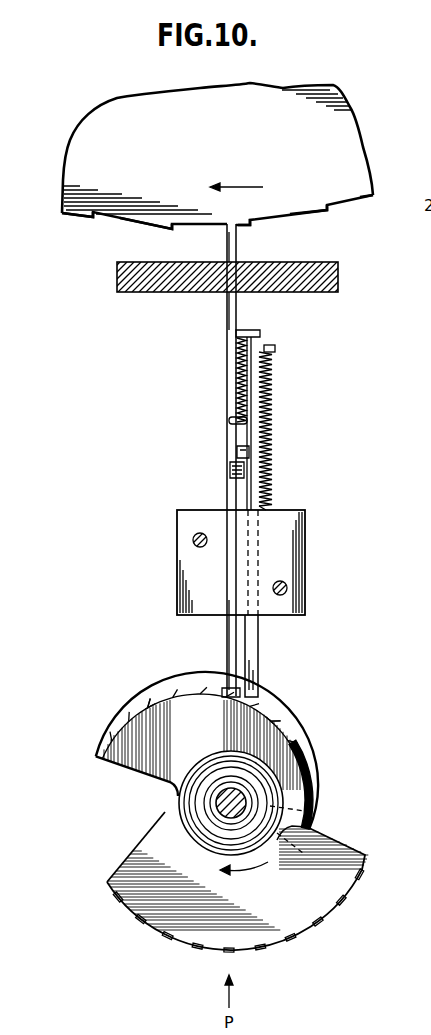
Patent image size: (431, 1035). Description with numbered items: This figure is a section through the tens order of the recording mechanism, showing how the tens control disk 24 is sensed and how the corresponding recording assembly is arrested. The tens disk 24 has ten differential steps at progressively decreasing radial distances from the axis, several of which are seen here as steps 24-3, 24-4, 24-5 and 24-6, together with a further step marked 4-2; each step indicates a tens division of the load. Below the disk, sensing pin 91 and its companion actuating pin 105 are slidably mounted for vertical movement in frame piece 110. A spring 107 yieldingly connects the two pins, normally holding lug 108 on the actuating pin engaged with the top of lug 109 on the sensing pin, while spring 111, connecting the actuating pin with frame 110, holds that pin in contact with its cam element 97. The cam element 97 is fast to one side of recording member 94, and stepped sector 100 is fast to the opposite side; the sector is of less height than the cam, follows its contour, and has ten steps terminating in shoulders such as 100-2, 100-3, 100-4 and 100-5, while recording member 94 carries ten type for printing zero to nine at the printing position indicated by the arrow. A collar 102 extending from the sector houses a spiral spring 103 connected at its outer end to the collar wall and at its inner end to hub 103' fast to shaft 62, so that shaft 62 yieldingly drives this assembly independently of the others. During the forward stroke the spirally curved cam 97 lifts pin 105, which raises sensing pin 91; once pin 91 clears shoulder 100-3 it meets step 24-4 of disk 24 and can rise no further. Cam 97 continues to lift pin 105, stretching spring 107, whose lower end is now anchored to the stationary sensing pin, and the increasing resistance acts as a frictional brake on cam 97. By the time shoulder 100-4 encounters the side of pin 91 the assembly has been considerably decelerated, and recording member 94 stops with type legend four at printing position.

The tens disk 24 is at (347, 138).
The tens step 24-6 is at (377, 196).
The tens step 24-5 is at (306, 216).
The tens step 24-4 is at (247, 227).
The tens step 24-3 is at (131, 224).
The cam plate step 4-2 is at (72, 219).
The sensing pin 91 is at (227, 313).
The spring 107 is at (237, 380).
The actuating pin 105 is at (253, 425).
The spring 111 is at (270, 402).
The lug 108 is at (237, 453).
The lug 109 is at (232, 481).
The frame piece 110 is at (296, 536).
The shoulder 100-3 is at (262, 692).
The shoulder 100-4 is at (222, 688).
The cam element 97 is at (296, 728).
The stepped sector 100 is at (276, 714).
The shoulder 100-2 is at (272, 701).
The shoulder 100-5 is at (160, 700).
The collar 102 is at (203, 767).
The spiral spring 103 is at (195, 803).
The shaft 62 is at (231, 805).
The hub 103' is at (314, 819).
The recording member 94 is at (295, 917).